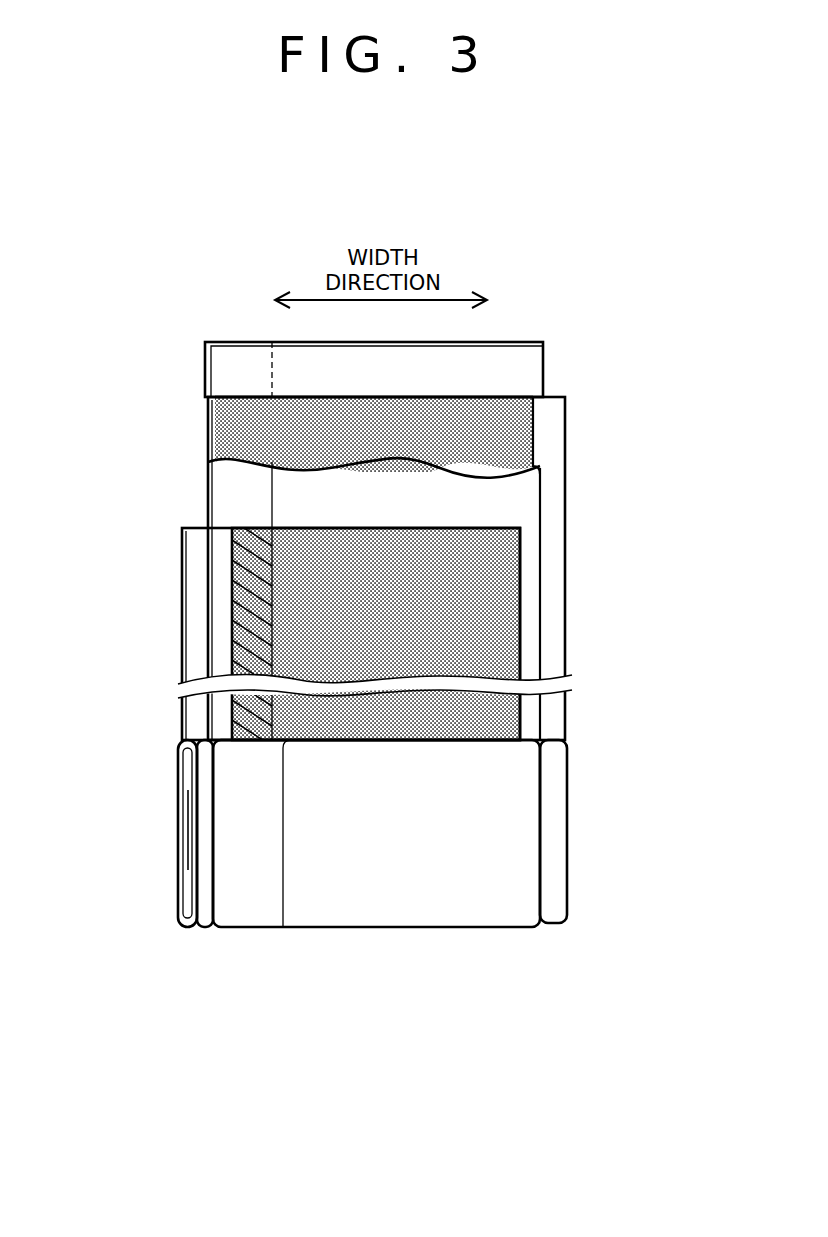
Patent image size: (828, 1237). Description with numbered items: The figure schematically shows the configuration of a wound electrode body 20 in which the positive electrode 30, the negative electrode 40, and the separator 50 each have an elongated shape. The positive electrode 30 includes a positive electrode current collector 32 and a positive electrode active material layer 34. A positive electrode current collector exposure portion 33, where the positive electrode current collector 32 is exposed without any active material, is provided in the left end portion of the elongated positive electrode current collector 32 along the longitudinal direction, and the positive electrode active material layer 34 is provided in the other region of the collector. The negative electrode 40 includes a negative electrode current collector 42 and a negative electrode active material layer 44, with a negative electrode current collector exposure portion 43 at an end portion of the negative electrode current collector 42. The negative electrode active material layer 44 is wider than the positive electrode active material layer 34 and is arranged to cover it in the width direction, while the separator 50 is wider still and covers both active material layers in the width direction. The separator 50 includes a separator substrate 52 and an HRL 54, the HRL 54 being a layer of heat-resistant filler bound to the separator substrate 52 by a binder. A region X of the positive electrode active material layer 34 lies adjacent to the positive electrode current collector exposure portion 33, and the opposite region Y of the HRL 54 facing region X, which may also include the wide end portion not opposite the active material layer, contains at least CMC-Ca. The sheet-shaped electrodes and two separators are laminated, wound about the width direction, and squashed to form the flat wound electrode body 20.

The wound electrode body 20 is at (433, 906).
The positive electrode 30 is at (353, 623).
The positive electrode current collector 32 is at (182, 552).
The positive electrode current collector exposure portion 33 is at (134, 634).
The positive electrode active material layer 34 is at (376, 623).
The negative electrode 40 is at (460, 721).
The negative electrode current collector 42 is at (626, 604).
The negative electrode current collector exposure portion 43 is at (553, 580).
The negative electrode active material layer 44 is at (505, 425).
The separator 50 is at (454, 365).
The separator substrate 52 is at (545, 355).
The HRL 54 is at (510, 508).
The region X is at (232, 646).
The opposite region Y is at (245, 367).